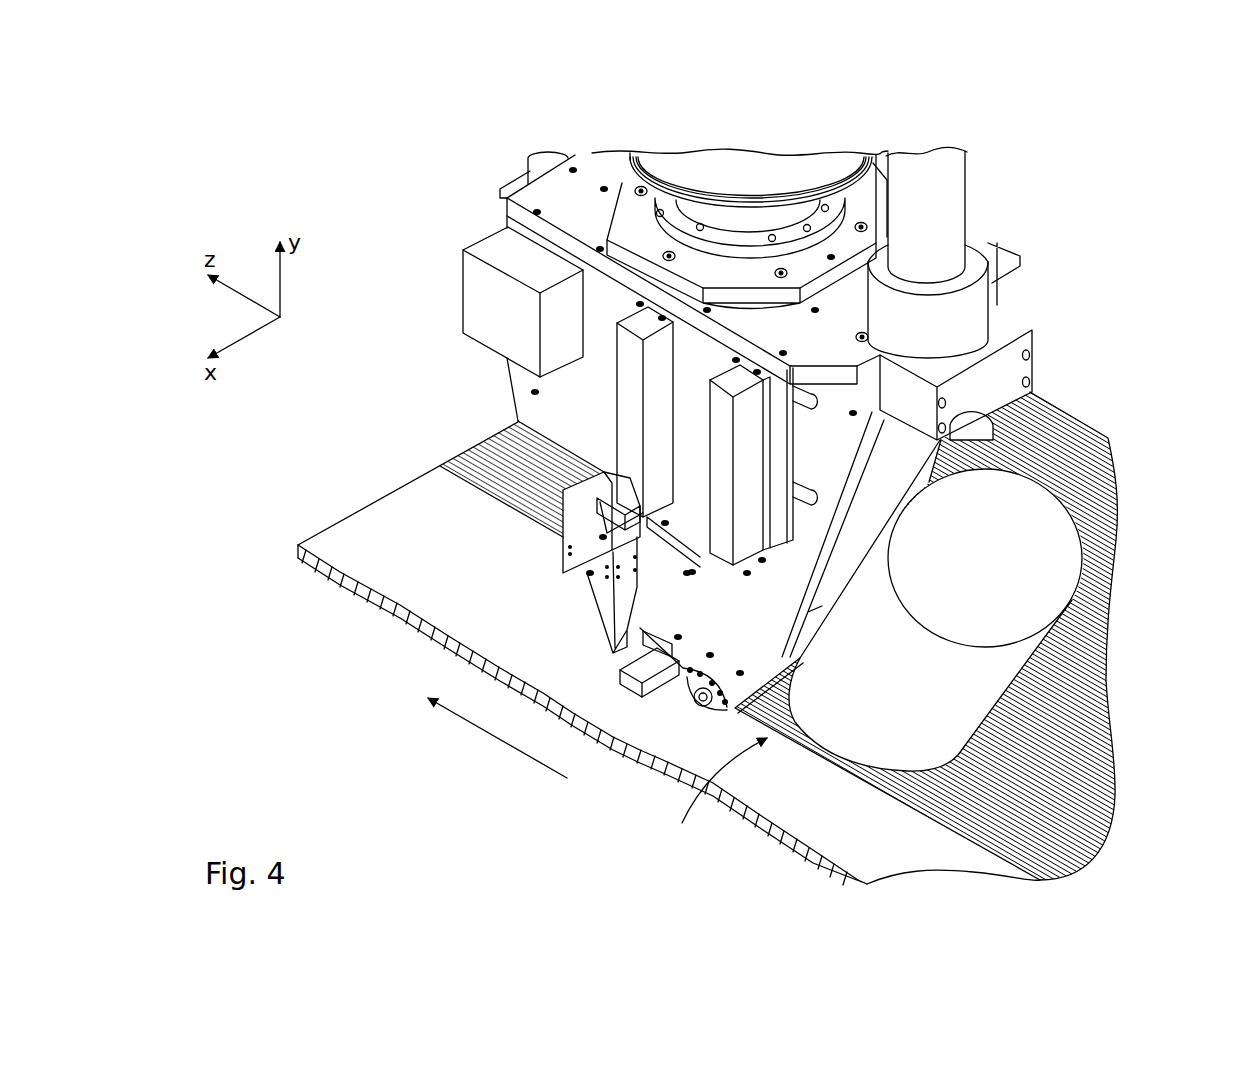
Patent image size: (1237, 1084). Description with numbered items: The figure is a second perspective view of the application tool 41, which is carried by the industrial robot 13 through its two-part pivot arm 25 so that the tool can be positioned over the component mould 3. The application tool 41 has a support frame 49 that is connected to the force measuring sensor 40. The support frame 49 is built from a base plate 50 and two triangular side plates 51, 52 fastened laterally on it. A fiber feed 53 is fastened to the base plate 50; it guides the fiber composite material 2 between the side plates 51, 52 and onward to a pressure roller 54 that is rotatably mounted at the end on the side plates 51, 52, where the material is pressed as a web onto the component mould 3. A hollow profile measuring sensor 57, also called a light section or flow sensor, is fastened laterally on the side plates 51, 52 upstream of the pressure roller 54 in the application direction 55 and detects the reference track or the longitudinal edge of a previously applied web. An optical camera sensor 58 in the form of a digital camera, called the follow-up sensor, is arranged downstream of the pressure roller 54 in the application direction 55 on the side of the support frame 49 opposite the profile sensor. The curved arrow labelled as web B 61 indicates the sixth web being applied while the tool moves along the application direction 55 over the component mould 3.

The fiber composite material 2 is at (1105, 533).
The component mould 3 is at (407, 590).
The industrial robot 13 is at (720, 159).
The pivot arm 25 is at (762, 178).
The force measuring sensor 40 is at (631, 183).
The application tool 41 is at (553, 149).
The support frame 49 is at (498, 206).
The base plate 50 is at (563, 217).
The side plate 51 is at (893, 474).
The side plate 52 is at (780, 710).
The fiber feed 53 is at (950, 208).
The pressure roller 54 is at (763, 673).
The application direction 55 is at (513, 746).
The hollow profile measuring sensor 57 is at (583, 560).
The optical camera sensor 58 is at (1042, 590).
The rotation direction B 61 is at (722, 801).